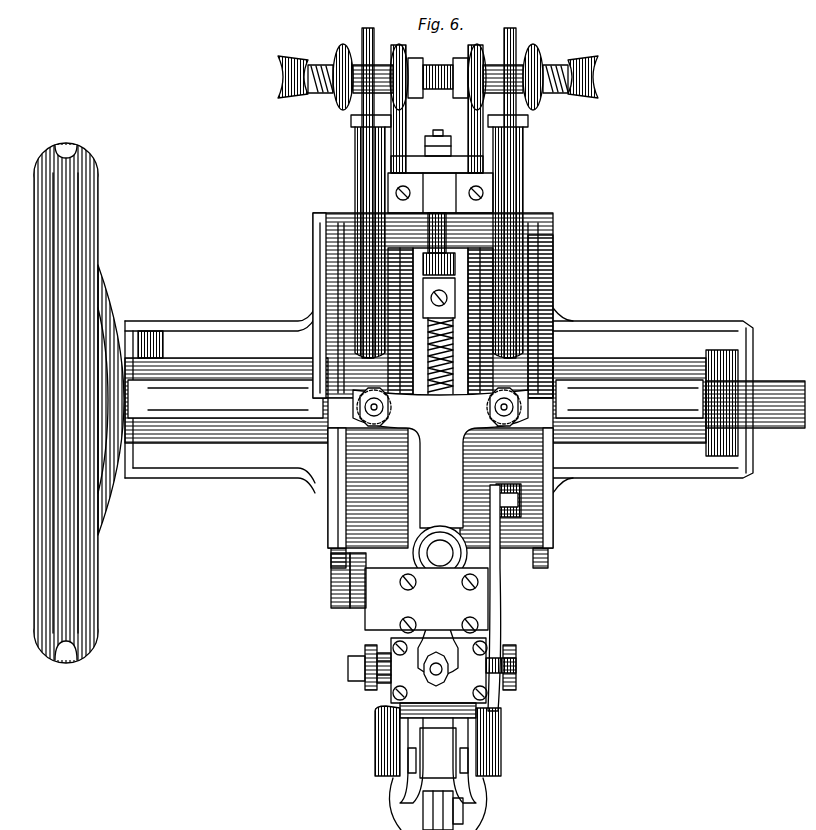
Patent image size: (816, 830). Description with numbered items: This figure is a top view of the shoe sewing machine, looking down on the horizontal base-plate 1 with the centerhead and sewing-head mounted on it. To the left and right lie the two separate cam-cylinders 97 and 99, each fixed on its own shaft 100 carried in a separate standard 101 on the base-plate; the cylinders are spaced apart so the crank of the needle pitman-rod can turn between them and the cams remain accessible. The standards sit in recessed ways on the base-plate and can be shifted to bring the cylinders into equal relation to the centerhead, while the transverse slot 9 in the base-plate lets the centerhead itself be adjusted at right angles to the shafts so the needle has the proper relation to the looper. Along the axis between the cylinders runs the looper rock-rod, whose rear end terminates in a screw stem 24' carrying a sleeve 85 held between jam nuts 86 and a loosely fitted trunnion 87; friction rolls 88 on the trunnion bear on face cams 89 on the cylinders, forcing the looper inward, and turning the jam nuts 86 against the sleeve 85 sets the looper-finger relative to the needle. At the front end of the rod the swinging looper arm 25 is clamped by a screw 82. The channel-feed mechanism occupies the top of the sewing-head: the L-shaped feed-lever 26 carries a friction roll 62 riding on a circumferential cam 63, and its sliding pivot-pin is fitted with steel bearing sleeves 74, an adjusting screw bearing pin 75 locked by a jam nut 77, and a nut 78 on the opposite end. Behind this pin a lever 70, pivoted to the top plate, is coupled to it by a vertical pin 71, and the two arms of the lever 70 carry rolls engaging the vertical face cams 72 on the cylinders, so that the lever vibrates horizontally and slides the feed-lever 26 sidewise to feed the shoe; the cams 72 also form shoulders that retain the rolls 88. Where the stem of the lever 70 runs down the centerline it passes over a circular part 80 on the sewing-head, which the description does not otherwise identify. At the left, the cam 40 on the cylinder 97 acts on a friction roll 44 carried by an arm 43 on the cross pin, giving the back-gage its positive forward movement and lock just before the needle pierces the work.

The base-plate 1 is at (439, 396).
The transverse slot 9 is at (720, 362).
The screw stem 24' is at (438, 108).
The looper arm 25 is at (438, 766).
The feed-lever 26 is at (492, 630).
The cam 40 is at (320, 515).
The arm 43 is at (348, 598).
The friction roll 44 is at (325, 585).
The friction roll 62 is at (509, 488).
The circumferential cam 63 is at (511, 441).
The lever 70 is at (440, 533).
The vertical pin 71 is at (425, 670).
The face cam 72 is at (390, 480).
The bearing sleeve 74 is at (440, 290).
The bearing pin 75 is at (340, 660).
The jam nut 77 is at (362, 678).
The nut 78 is at (508, 665).
The boss 80 is at (440, 553).
The screw 82 is at (457, 806).
The sleeve 85 is at (438, 233).
The jam nuts 86 is at (443, 136).
The trunnion 87 is at (439, 264).
The friction rolls 88 is at (412, 235).
The face cams 89 is at (439, 407).
The left cam-cylinder 97 is at (320, 488).
The right cam-cylinder 99 is at (540, 272).
The shaft 100 is at (755, 404).
The standard 101 is at (415, 400).